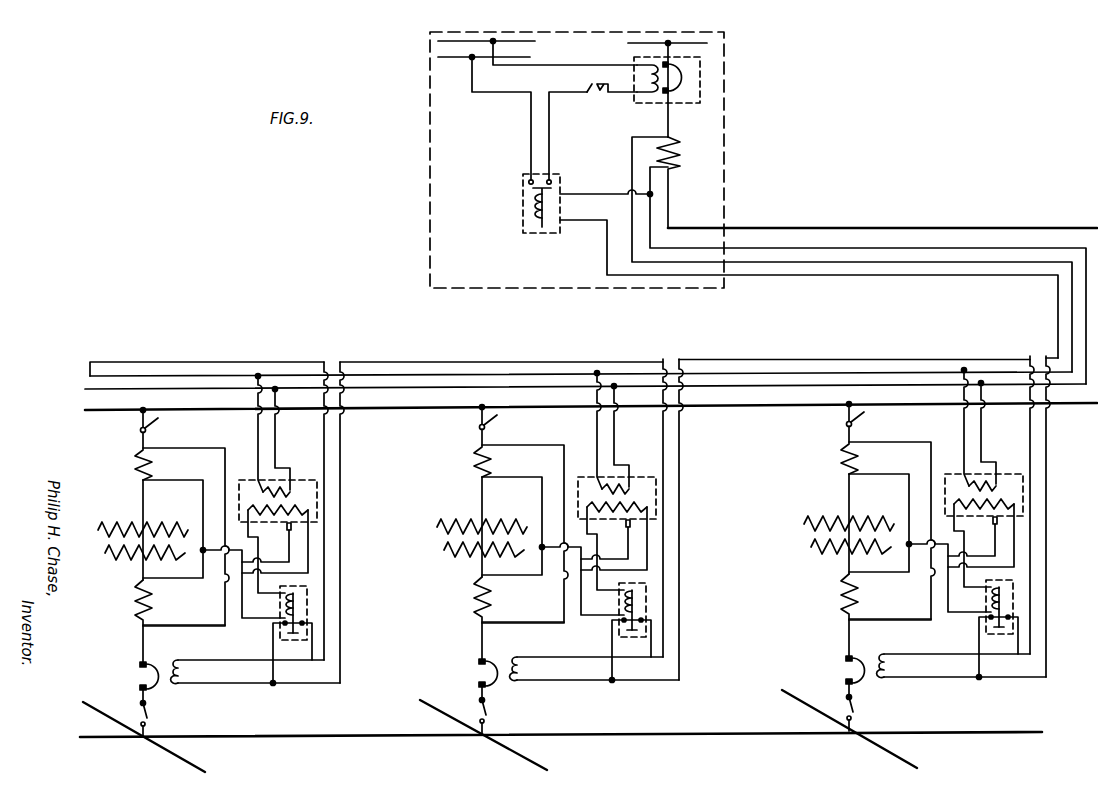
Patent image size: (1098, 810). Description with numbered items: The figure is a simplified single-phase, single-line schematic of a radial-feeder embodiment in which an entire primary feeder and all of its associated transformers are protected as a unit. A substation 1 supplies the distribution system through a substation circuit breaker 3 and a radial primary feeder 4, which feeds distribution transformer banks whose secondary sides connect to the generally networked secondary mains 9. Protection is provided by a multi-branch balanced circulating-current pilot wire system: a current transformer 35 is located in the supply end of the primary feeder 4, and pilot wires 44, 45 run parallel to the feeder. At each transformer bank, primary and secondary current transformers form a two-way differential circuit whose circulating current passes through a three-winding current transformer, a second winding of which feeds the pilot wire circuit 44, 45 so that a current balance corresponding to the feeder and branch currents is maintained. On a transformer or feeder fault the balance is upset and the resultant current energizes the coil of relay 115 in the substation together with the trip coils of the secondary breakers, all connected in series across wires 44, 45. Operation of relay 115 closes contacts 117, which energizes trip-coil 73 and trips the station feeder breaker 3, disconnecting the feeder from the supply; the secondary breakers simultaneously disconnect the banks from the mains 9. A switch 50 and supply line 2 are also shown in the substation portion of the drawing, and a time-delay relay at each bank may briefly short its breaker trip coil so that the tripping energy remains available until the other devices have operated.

The substation 1 is at (724, 142).
The supply line 2 is at (628, 43).
The substation circuit breaker 3 is at (690, 100).
The radial primary feeder 4 is at (880, 229).
The secondary mains 9 is at (285, 736).
The current transformer 35 is at (682, 163).
The pilot wire 44 is at (823, 246).
The pilot wire 45 is at (838, 263).
The switch 50 is at (586, 89).
The trip-coil 73 is at (648, 100).
The relay 115 is at (523, 219).
The contacts 117 is at (528, 180).